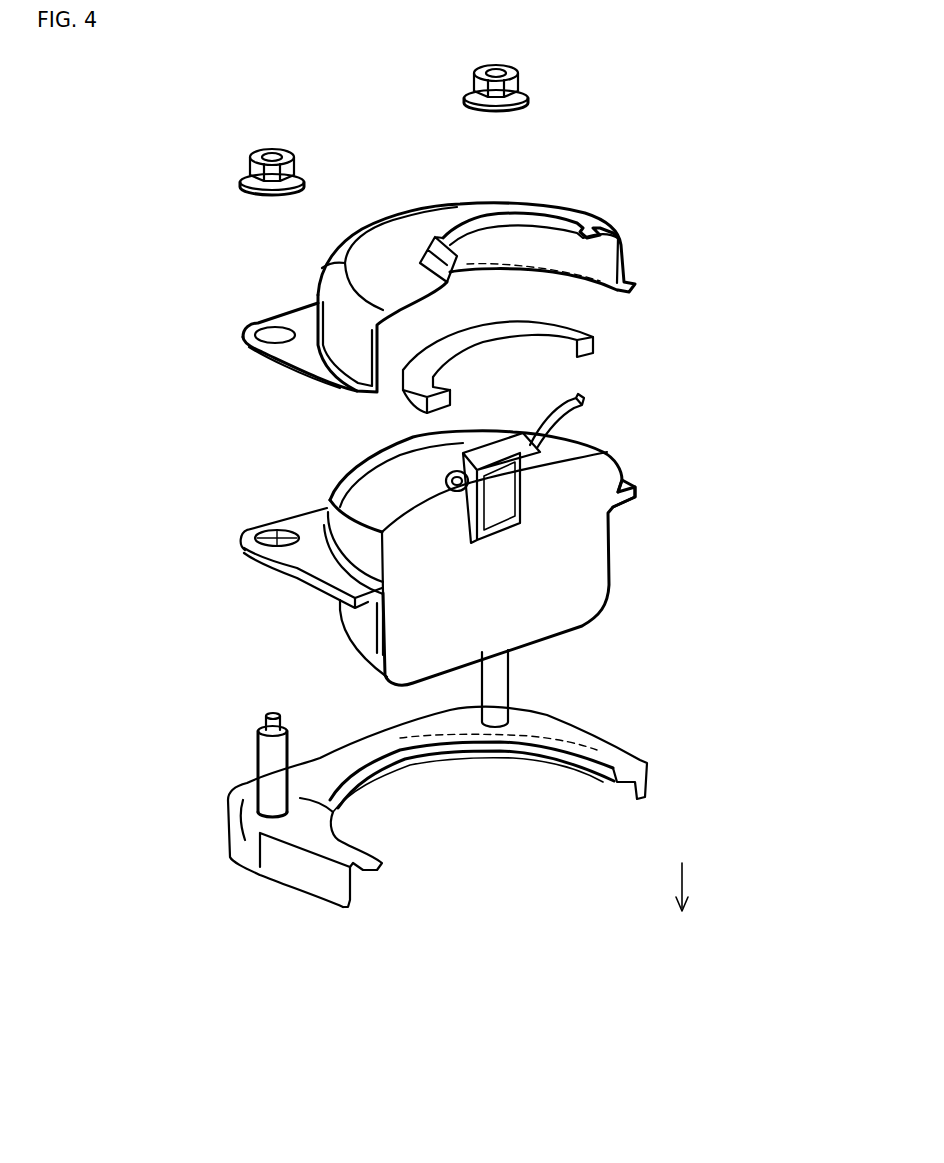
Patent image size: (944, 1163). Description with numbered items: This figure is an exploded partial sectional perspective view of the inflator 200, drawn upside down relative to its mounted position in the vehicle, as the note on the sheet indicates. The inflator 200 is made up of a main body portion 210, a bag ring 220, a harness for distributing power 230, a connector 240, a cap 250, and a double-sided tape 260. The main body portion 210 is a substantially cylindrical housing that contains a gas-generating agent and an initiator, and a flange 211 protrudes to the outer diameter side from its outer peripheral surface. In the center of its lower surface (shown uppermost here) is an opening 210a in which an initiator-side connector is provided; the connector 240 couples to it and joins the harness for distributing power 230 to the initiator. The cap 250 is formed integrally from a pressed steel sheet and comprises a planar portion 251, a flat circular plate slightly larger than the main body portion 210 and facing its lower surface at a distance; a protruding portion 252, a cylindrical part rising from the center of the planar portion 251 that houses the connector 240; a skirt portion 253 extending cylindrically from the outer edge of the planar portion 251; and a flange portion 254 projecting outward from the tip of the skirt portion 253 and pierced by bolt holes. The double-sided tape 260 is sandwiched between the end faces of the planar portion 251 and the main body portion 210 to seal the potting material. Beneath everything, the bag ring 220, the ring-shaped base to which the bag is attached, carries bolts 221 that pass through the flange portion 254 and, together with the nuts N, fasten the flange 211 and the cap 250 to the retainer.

The inflator 200 is at (186, 153).
The nuts N is at (289, 150).
The cap 250 is at (648, 235).
The planar portion 251 is at (380, 262).
The protruding portion 252 is at (553, 205).
The skirt portion 253 is at (337, 333).
The flange portion 254 is at (249, 344).
The double-sided tape 260 is at (595, 336).
The harness for distributing power 230 is at (583, 404).
The connector 240 is at (523, 450).
The main body portion 210 is at (609, 550).
The opening 210a is at (440, 479).
The flange 211 is at (633, 488).
The bag ring 220 is at (268, 872).
The bolts 221 is at (259, 749).